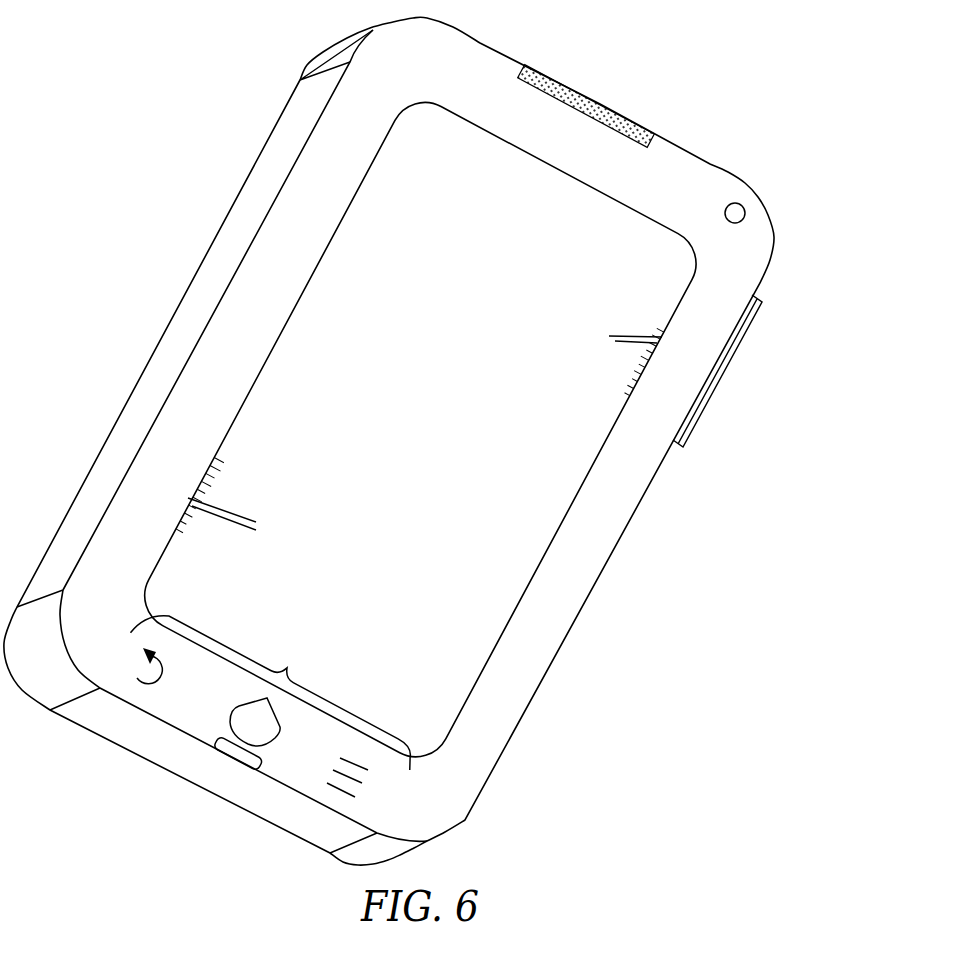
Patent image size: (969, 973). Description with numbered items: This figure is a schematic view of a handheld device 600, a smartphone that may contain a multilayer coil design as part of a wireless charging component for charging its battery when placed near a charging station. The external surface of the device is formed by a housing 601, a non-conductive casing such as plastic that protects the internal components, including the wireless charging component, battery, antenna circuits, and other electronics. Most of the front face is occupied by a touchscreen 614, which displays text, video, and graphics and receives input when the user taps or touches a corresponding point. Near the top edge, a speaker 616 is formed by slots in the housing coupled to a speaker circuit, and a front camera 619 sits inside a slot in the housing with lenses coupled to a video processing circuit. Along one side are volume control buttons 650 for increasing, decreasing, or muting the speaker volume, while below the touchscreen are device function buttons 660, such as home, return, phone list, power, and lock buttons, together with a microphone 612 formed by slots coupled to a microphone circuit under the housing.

The handheld device 600 is at (126, 64).
The housing 601 is at (522, 663).
The microphone 612 is at (227, 753).
The touchscreen 614 is at (307, 371).
The speaker 616 is at (607, 112).
The front (face) camera 619 is at (746, 206).
The volume control buttons 650 is at (712, 398).
The device function buttons 660 is at (285, 672).